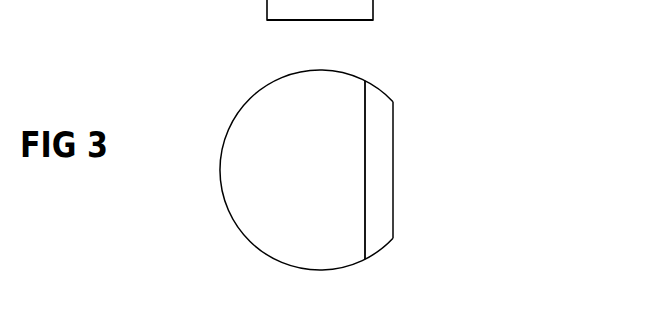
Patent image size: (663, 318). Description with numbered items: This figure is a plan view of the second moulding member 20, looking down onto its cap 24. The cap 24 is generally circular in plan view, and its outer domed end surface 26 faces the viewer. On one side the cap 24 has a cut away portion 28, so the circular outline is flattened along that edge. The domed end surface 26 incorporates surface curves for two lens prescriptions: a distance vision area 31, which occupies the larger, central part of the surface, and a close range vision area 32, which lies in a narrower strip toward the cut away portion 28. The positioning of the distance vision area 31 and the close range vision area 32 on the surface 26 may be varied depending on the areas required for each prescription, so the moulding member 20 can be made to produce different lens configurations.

The second moulding member 20 is at (214, 146).
The cap 24 is at (260, 133).
The outer domed end surface 26 is at (240, 229).
The cut away portion 28 is at (392, 158).
The distance vision area 31 is at (320, 186).
The close range vision area 32 is at (393, 186).